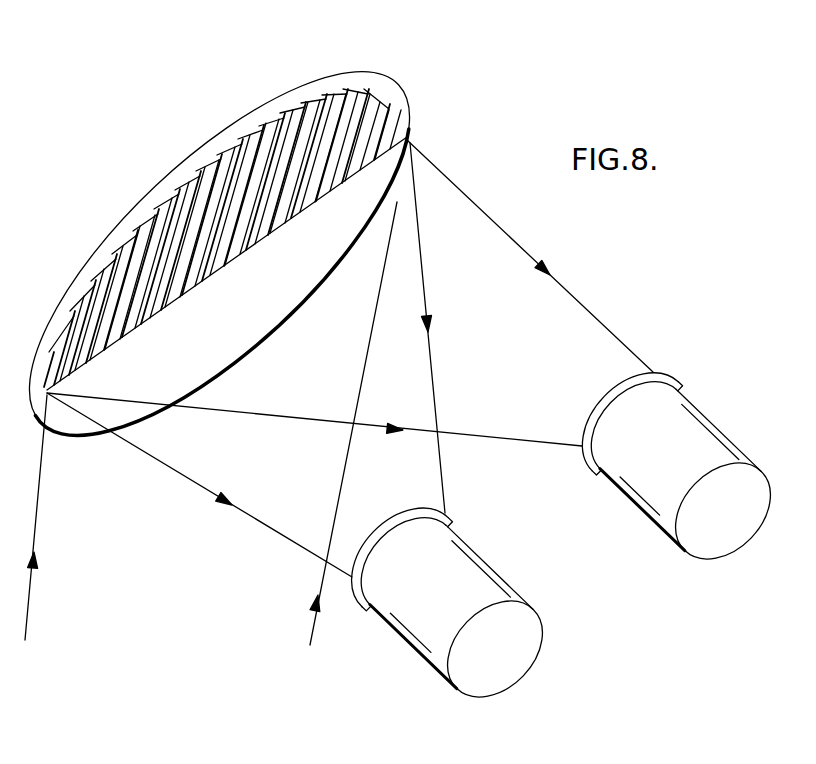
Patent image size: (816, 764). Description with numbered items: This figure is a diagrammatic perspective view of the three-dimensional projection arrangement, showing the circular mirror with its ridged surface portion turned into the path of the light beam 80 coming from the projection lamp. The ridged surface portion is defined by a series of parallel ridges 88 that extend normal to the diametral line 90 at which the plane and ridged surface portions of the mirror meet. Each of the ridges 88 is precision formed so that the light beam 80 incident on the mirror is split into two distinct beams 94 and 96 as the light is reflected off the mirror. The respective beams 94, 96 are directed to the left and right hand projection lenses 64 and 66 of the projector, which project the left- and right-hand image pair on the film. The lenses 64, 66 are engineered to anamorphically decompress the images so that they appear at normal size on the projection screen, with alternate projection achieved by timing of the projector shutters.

The left hand projection lens 64 is at (658, 486).
The right hand projection lens 66 is at (415, 605).
The light beam 80 is at (40, 492).
The ridges 88 is at (358, 95).
The diametral line 90 is at (316, 202).
The beam 94 is at (282, 490).
The beam 96 is at (571, 336).